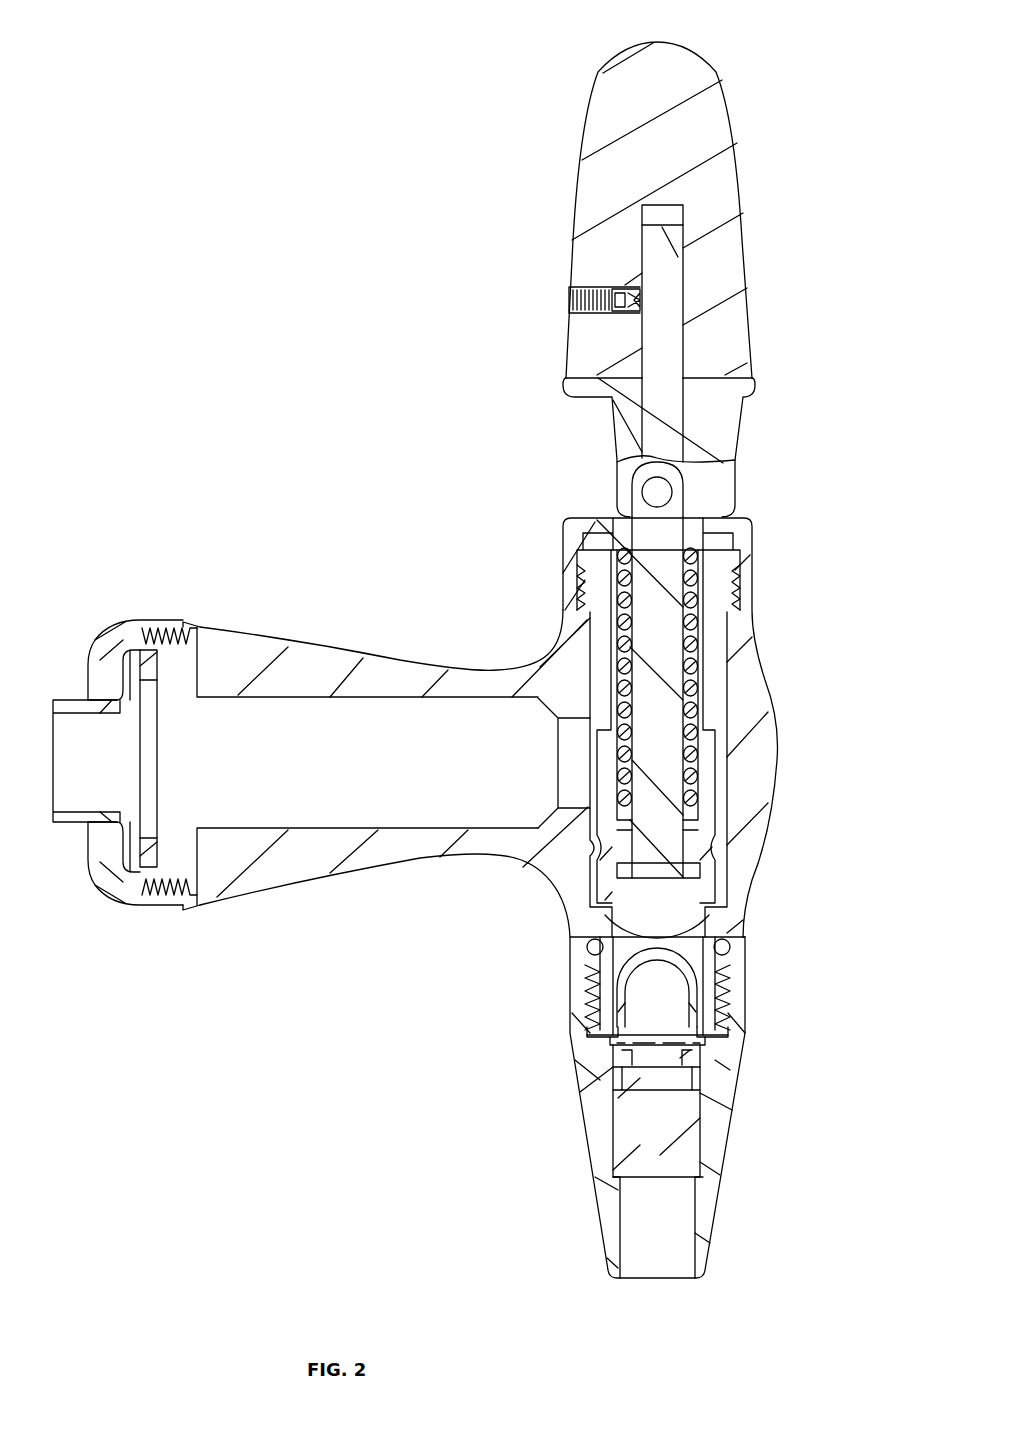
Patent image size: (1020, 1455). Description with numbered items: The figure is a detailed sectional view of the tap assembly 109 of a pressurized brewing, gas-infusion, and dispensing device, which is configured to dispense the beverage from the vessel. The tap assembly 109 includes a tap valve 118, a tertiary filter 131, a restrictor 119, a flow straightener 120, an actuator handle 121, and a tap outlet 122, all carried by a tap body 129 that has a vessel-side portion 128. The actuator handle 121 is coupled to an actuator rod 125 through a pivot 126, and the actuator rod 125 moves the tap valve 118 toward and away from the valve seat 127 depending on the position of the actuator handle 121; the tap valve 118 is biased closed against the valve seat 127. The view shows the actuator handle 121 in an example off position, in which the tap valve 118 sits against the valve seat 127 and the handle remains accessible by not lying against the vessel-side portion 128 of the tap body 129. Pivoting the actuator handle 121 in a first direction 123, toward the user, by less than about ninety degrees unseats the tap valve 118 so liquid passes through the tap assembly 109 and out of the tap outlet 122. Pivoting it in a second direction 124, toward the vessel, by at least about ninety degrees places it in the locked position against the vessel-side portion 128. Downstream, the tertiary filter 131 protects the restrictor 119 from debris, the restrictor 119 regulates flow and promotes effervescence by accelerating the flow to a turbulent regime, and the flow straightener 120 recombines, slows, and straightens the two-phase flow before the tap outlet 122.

The tap assembly 109 is at (200, 157).
The tap valve 118 is at (715, 862).
The restrictor 119 is at (662, 1032).
The flow straightener 120 is at (667, 1120).
The actuator handle 121 is at (745, 200).
The tap outlet 122 is at (660, 1280).
The first direction 123 is at (703, 18).
The second direction 124 is at (604, 18).
The actuator rod 125 is at (660, 647).
The pivot 126 is at (675, 492).
The valve seat 127 is at (705, 915).
The vessel-side portion 128 is at (200, 620).
The tap body 129 is at (762, 692).
The tertiary filter 131 is at (690, 960).